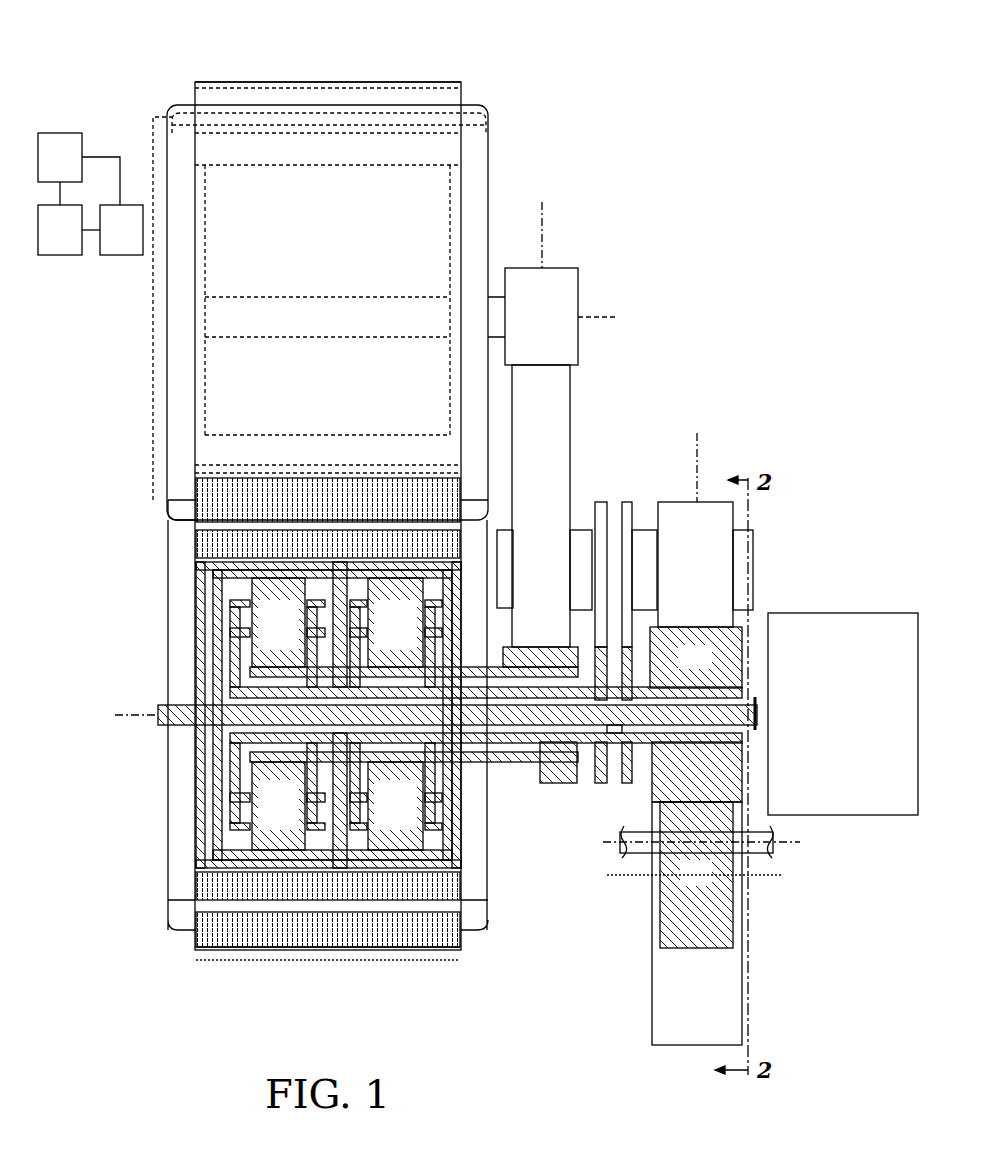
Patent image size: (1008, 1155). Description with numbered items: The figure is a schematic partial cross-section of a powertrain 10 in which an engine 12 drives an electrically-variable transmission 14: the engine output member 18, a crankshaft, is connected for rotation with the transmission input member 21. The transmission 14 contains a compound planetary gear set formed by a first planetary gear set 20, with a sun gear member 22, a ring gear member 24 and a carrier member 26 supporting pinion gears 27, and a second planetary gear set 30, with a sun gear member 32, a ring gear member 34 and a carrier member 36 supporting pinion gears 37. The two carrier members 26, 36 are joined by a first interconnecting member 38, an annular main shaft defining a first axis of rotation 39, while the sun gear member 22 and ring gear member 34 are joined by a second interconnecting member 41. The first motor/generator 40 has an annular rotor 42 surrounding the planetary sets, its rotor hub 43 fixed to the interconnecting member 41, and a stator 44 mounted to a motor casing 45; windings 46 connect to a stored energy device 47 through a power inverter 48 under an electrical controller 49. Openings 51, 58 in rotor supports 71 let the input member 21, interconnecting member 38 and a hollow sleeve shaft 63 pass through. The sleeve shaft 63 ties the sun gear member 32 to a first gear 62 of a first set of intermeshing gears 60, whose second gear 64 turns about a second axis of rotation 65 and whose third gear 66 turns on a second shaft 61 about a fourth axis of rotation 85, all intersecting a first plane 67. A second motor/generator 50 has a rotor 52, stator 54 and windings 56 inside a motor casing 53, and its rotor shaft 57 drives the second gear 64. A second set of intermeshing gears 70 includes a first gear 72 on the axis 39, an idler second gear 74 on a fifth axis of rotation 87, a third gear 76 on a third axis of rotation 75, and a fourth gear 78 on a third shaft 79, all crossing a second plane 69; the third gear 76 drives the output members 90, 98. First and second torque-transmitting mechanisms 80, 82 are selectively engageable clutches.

The powertrain 10 is at (583, 56).
The engine 12 is at (843, 714).
The electrically-variable transmission 14 is at (497, 952).
The output member 18 is at (757, 700).
The first planetary gear set 20 is at (317, 832).
The input member 21 is at (620, 740).
The sun gear member 22 is at (242, 660).
The ring gear member 24 is at (232, 582).
The carrier member 26 is at (234, 605).
The pinion gears 27 is at (278, 714).
The second planetary gear set 30 is at (440, 842).
The sun gear member 32 is at (460, 800).
The ring gear member 34 is at (425, 782).
The carrier member 36 is at (357, 790).
The pinion gears 37 is at (395, 714).
The first interconnecting member 38 is at (230, 697).
The first axis of rotation 39 is at (128, 715).
The first motor/generator 40 is at (185, 977).
The second interconnecting member 41 is at (332, 597).
The rotor 42 is at (200, 886).
The rotor hub 43 is at (347, 600).
The stator 44 is at (245, 950).
The motor casing 45 is at (290, 962).
The electrical windings 46 is at (157, 505).
The stored energy device 47 is at (79, 169).
The power inverter 48 is at (121, 230).
The electrical controller 49 is at (69, 230).
The second motor/generator 50 is at (481, 56).
The opening 51 is at (200, 745).
The rotor 52 is at (450, 172).
The motor casing 53 is at (293, 82).
The stator 54 is at (388, 82).
The electrical windings 56 is at (490, 128).
The rotor shaft 57 is at (497, 297).
The opening 58 is at (462, 640).
The first set of intermeshing gears 60 is at (540, 830).
The second shaft 61 is at (597, 502).
The first gear 62 is at (555, 780).
The sleeve shaft 63 is at (497, 784).
The second gear 64 is at (541, 316).
The second axis of rotation 65 is at (610, 317).
The third gear 66 is at (541, 506).
The first plane 67 is at (542, 240).
The second plane 69 is at (697, 458).
The second set of intermeshing gears 70 is at (688, 1060).
The rotor supports 71 is at (200, 682).
The first gear 72 is at (696, 714).
The second gear 74 is at (696, 875).
The third axis of rotation 75 is at (790, 845).
The third gear 76 is at (697, 923).
The fourth gear 78 is at (695, 564).
The third shaft 79 is at (627, 502).
The first torque-transmitting mechanism 80 is at (617, 500).
The second torque-transmitting mechanism 82 is at (610, 790).
The fourth axis of rotation 85 is at (755, 568).
The fifth axis of rotation 87 is at (613, 872).
The output member 90 is at (755, 858).
The output member 98 is at (635, 876).